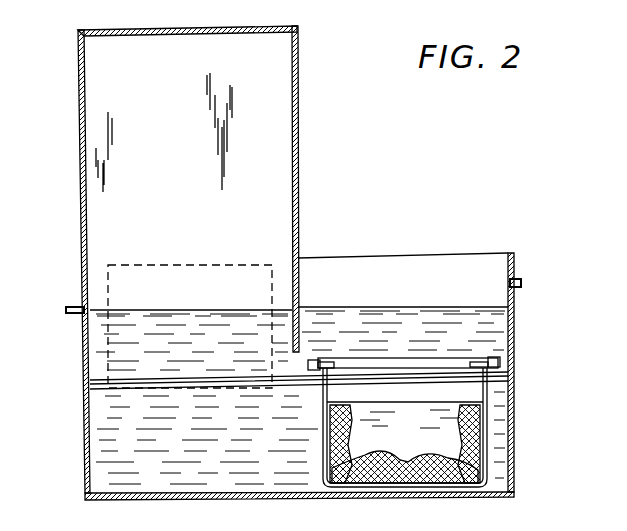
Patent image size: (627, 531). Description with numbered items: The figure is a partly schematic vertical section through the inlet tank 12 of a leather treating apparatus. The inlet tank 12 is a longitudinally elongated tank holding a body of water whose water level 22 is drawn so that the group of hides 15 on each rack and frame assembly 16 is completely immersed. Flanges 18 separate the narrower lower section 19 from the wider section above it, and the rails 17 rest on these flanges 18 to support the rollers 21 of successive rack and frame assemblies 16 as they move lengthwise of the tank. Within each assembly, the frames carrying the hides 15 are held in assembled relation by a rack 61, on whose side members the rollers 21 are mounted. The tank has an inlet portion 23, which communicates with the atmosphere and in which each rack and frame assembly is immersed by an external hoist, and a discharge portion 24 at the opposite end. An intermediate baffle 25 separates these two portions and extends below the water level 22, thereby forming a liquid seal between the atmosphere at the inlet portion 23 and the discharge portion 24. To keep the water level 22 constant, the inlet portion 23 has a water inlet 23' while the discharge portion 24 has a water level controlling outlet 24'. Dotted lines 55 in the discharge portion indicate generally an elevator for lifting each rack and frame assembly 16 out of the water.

The inlet tank 12 is at (76, 152).
The hides 15 is at (420, 436).
The rack and frame assembly 16 is at (321, 401).
The rails 17 is at (101, 382).
The flanges 18 is at (96, 390).
The lower section 19 is at (200, 459).
The rollers 21 is at (331, 363).
The water level 22 is at (506, 299).
The inlet portion 23 is at (406, 278).
The water inlet 23' is at (536, 275).
The discharge portion 24 is at (164, 133).
The water level controlling outlet 24' is at (60, 298).
The intermediate baffle 25 is at (300, 270).
The elevator 55 is at (150, 264).
The rack 61 is at (432, 352).